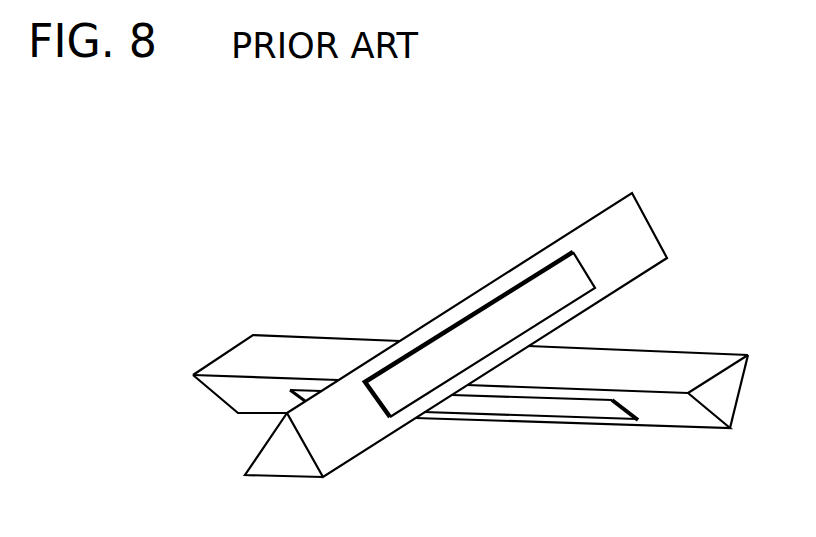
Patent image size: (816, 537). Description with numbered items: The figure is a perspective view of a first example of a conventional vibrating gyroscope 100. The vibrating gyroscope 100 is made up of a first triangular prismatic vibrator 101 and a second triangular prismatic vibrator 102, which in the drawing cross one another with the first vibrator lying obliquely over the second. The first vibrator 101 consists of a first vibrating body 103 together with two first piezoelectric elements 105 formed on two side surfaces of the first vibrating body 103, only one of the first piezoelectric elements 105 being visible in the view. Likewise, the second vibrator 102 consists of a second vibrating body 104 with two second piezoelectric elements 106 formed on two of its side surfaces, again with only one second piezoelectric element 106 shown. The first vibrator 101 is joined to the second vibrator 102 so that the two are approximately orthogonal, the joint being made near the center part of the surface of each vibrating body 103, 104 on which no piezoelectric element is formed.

The vibrating gyroscope 100 is at (775, 136).
The first triangular prismatic vibrator 101 is at (634, 188).
The second triangular prismatic vibrator 102 is at (668, 348).
The first vibrating body 103 is at (595, 240).
The second vibrating body 104 is at (682, 418).
The first piezoelectric element 105 is at (461, 335).
The second piezoelectric element 106 is at (560, 413).